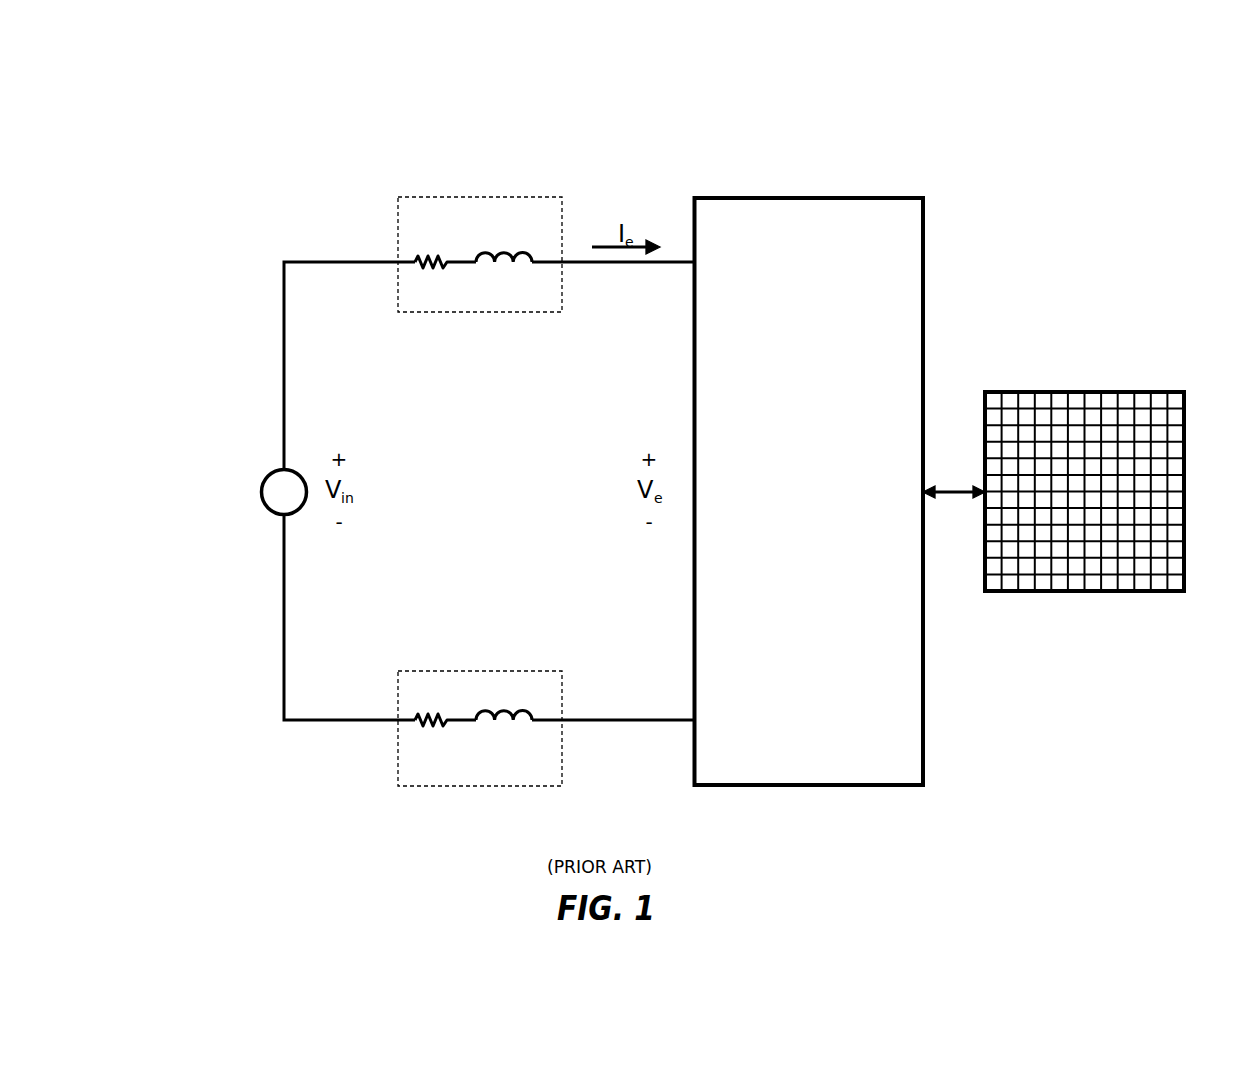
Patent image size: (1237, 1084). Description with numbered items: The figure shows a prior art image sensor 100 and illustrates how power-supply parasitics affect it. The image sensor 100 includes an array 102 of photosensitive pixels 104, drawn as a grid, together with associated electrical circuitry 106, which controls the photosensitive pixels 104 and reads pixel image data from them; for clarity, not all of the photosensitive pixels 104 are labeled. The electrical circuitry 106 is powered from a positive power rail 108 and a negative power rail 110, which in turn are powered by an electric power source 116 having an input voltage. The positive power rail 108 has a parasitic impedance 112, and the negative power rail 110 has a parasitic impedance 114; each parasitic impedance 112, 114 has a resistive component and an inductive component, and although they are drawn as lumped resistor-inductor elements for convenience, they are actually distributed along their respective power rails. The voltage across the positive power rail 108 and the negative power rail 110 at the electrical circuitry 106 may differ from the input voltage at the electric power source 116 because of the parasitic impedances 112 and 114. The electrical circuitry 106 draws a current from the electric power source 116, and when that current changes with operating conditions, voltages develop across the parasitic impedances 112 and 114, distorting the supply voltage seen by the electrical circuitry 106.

The prior art image sensor 100 is at (1125, 141).
The array 102 is at (1100, 466).
The photosensitive pixels 104 is at (1027, 404).
The electrical circuitry 106 is at (893, 243).
The positive power rail 108 is at (316, 260).
The negative power rail 110 is at (316, 718).
The parasitic impedance 112 is at (445, 305).
The parasitic impedance 114 is at (435, 696).
The electric power source 116 is at (261, 491).